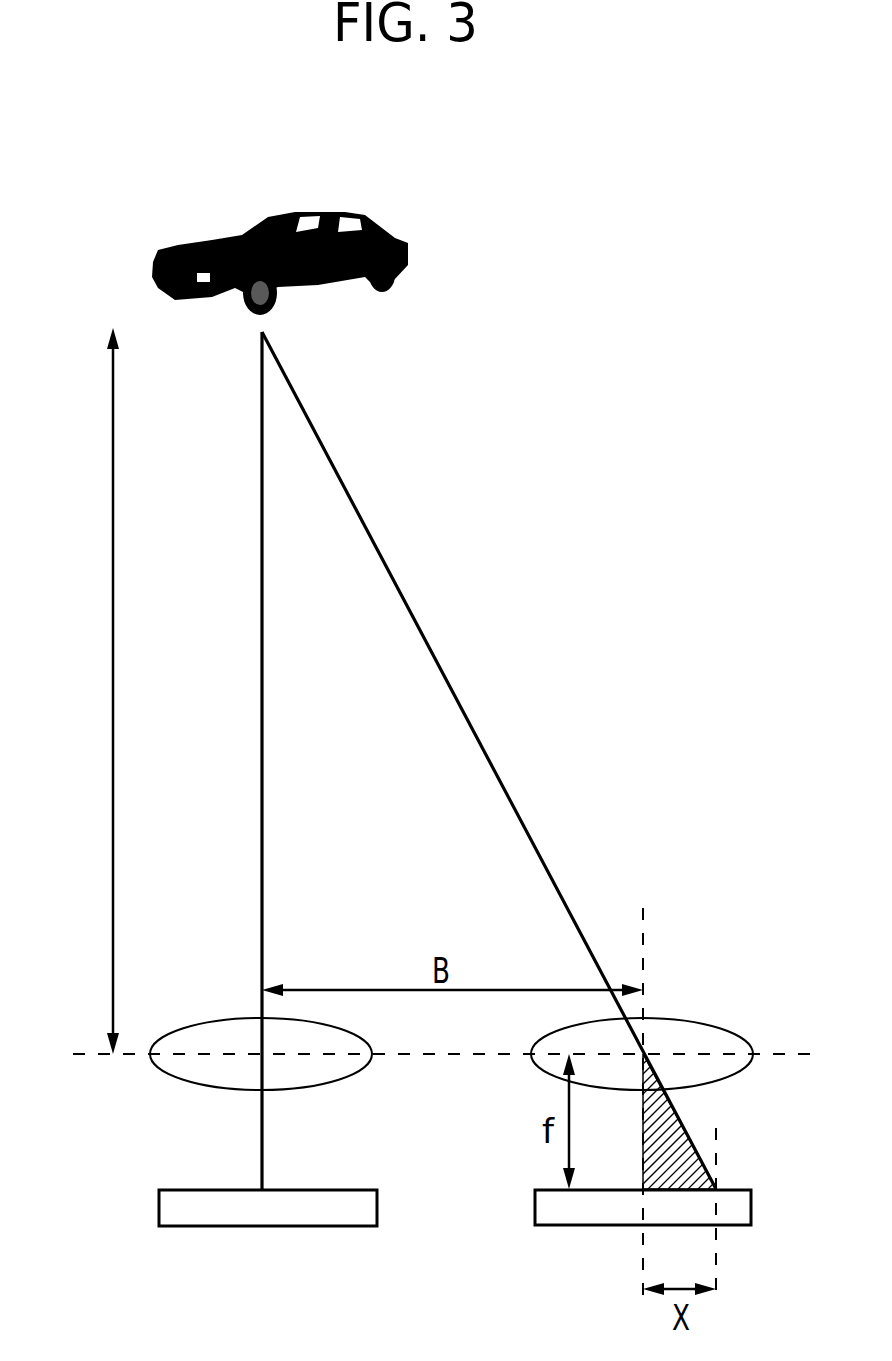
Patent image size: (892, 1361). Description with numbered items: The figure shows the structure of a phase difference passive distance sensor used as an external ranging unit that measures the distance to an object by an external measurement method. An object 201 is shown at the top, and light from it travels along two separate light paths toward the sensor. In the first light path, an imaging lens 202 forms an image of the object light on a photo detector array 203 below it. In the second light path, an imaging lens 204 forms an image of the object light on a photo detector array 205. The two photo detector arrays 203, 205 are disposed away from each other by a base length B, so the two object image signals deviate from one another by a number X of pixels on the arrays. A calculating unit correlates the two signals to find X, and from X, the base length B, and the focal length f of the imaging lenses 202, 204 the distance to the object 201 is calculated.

The object 201 is at (367, 223).
The imaging lens in a first light path 202 is at (170, 1075).
The photo detector array in the first light path 203 is at (160, 1205).
The imaging lens in a second light path 204 is at (722, 1031).
The photo detector array in the second light path 205 is at (534, 1208).